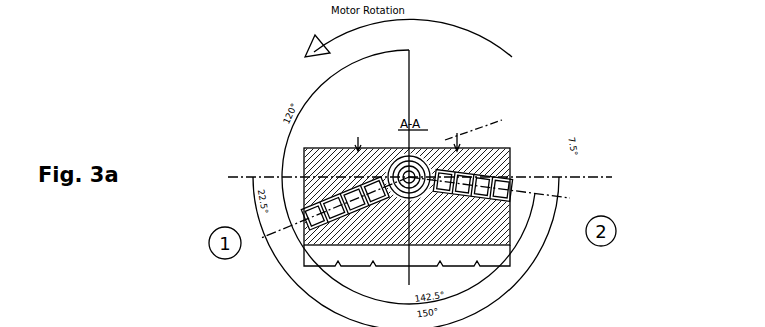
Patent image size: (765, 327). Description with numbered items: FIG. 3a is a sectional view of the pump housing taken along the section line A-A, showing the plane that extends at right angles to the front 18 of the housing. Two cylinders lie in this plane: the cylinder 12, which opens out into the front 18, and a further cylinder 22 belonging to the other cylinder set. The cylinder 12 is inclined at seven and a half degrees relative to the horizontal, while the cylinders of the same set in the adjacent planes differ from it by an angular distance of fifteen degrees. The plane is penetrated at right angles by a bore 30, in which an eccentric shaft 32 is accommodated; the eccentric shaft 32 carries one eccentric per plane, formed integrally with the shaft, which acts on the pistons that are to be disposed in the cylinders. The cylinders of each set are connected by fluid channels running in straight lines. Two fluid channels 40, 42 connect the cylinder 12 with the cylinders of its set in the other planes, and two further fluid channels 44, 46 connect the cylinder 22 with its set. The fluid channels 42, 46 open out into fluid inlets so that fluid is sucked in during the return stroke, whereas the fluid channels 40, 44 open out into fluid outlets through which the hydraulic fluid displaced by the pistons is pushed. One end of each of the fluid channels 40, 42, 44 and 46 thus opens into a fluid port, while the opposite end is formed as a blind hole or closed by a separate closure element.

The cylinder 12 is at (510, 162).
The front 18 is at (511, 246).
The further cylinder 22 is at (305, 216).
The bore 30 is at (399, 160).
The eccentric shaft 32 is at (420, 162).
The fluid channel 40 is at (510, 208).
The fluid channel 42 is at (458, 192).
The fluid channel 44 is at (340, 197).
The fluid channel 46 is at (368, 192).